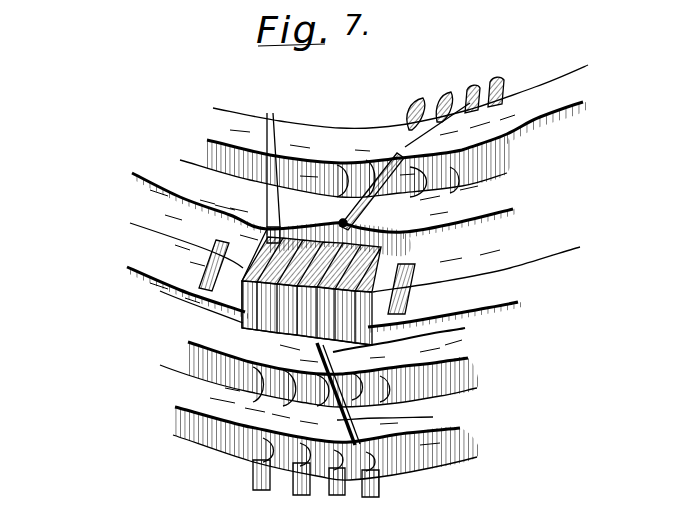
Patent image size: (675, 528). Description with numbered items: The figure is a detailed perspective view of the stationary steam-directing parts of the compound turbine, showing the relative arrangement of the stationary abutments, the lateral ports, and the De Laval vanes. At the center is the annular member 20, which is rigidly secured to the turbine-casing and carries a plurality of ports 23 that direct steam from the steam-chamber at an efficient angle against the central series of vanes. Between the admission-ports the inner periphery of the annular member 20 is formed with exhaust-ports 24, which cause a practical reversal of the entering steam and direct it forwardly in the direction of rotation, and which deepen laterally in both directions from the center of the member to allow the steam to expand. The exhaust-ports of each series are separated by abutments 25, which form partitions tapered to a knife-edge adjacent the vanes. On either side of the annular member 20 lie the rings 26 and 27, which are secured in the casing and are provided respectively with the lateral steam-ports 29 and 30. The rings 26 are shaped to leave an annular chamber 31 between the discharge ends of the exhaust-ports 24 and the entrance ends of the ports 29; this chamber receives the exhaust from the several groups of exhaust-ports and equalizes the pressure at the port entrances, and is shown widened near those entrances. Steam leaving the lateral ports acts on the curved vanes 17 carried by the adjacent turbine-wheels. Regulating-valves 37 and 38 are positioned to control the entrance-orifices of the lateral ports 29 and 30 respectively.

The curved vanes 17 is at (493, 93).
The central annular member 20 is at (490, 286).
The ports 23 is at (243, 265).
The exhaust-ports 24 is at (274, 165).
The abutments 25 is at (277, 313).
The rings 26 is at (468, 222).
The rings 27 is at (535, 105).
The steam-ports 29 is at (378, 210).
The steam-ports 30 is at (408, 128).
The annular chamber 31 is at (517, 208).
The regulating-valves 37 is at (339, 221).
The regulating-valves 38 is at (392, 158).